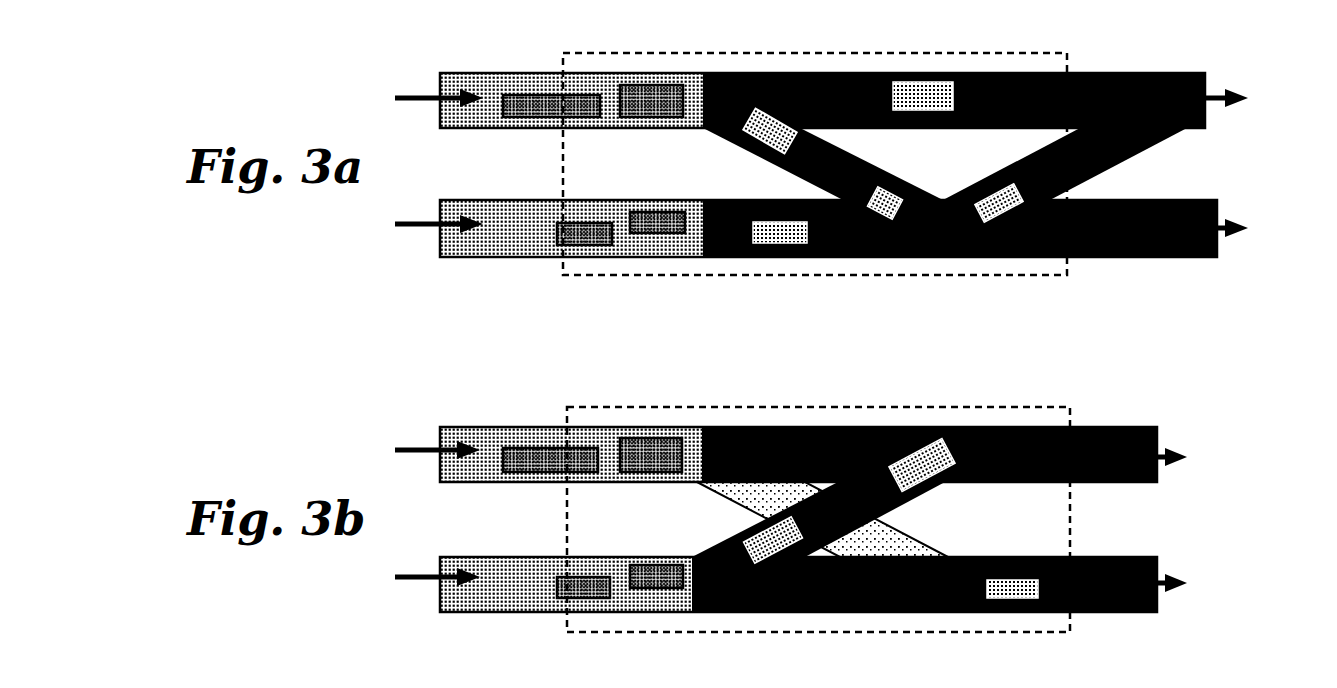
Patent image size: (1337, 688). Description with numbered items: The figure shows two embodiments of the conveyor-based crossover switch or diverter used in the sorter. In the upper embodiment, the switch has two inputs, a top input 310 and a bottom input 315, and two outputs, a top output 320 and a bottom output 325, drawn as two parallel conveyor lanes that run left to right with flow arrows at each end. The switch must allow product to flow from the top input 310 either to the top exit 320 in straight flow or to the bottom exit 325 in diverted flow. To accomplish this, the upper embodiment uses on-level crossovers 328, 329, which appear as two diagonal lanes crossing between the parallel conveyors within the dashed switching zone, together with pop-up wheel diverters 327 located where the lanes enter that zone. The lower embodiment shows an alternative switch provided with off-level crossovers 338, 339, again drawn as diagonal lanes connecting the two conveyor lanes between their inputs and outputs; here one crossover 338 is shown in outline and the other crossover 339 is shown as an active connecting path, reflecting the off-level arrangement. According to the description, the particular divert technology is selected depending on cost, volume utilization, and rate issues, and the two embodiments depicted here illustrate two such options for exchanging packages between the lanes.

In FIG. 3A, the top input 310 is at (440, 80).
In FIG. 3A, the bottom input 315 is at (440, 235).
In FIG. 3A, the top output 320 is at (1205, 82).
In FIG. 3A, the bottom output 325 is at (1217, 248).
In FIG. 3A, the pop-up wheel diverters 327 is at (748, 73).
In FIG. 3A, the on-level crossover 328 is at (822, 160).
In FIG. 3A, the on-level crossover 329 is at (1058, 160).
In FIG. 3B, the off-level crossover 338 is at (775, 497).
In FIG. 3B, the off-level crossover 339 is at (873, 497).